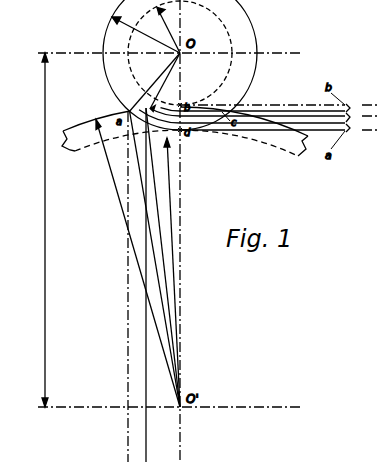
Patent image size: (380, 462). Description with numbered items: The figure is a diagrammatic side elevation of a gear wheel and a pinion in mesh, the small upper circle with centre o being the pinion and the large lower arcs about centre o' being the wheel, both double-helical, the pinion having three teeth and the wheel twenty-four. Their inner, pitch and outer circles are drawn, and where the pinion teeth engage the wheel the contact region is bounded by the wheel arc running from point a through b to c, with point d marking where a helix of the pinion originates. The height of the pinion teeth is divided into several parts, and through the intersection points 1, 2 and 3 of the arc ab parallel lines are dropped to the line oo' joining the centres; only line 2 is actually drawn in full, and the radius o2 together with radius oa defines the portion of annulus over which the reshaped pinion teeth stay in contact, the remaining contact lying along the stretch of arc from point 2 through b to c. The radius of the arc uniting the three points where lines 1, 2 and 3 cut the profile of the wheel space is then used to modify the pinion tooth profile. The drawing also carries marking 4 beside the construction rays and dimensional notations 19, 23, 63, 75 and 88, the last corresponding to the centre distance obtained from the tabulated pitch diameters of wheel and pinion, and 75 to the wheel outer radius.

The intersection point / line 1 is at (249, 122).
The intersection point / line 2 is at (247, 110).
The intersection point / line 3 is at (253, 104).
The radial line to layer intersection 4 is at (164, 82).
The radial line / angle 19 is at (146, 34).
The radial line / angle 23 is at (168, 31).
The radius 63 dimension 63 is at (166, 272).
The radius 75 dimension 75 is at (138, 264).
The center distance 88 dimension 88 is at (39, 230).